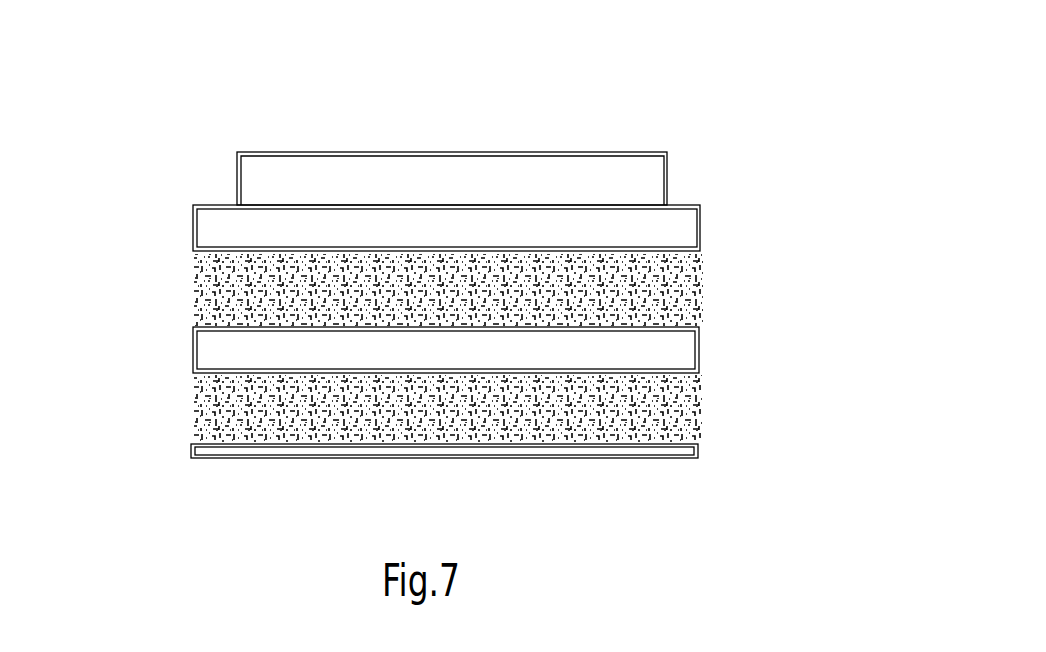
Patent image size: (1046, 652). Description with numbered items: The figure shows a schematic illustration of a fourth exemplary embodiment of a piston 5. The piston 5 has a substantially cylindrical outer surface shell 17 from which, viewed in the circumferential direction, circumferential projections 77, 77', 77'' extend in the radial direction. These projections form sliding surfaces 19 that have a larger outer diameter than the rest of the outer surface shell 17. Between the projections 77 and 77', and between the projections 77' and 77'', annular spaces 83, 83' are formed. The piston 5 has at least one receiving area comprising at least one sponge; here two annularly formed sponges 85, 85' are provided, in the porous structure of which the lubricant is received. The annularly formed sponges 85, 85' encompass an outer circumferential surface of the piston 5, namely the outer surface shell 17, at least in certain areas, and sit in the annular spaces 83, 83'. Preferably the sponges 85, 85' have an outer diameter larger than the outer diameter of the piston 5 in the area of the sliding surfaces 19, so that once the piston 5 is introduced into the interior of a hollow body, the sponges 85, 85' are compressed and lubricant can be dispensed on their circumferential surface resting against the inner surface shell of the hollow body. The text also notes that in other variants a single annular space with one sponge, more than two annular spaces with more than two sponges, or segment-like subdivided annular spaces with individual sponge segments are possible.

The piston 5 is at (688, 126).
The outer surface shell 17 is at (237, 166).
The sliding surfaces 19 is at (193, 223).
The circumferential projection 77 is at (411, 542).
The circumferential projection 77' is at (380, 375).
The circumferential projection 77'' is at (383, 258).
The annular space 83 is at (518, 408).
The annular space 83' is at (511, 290).
The annularly formed sponge 85 is at (448, 472).
The annularly formed sponge 85' is at (531, 290).